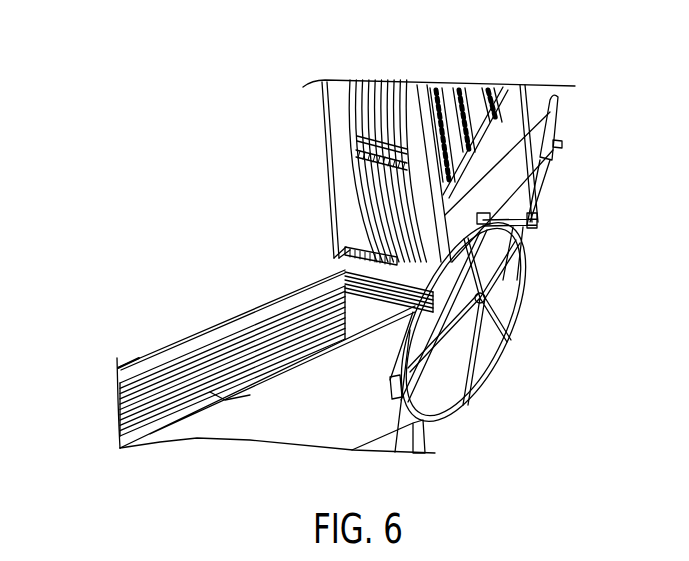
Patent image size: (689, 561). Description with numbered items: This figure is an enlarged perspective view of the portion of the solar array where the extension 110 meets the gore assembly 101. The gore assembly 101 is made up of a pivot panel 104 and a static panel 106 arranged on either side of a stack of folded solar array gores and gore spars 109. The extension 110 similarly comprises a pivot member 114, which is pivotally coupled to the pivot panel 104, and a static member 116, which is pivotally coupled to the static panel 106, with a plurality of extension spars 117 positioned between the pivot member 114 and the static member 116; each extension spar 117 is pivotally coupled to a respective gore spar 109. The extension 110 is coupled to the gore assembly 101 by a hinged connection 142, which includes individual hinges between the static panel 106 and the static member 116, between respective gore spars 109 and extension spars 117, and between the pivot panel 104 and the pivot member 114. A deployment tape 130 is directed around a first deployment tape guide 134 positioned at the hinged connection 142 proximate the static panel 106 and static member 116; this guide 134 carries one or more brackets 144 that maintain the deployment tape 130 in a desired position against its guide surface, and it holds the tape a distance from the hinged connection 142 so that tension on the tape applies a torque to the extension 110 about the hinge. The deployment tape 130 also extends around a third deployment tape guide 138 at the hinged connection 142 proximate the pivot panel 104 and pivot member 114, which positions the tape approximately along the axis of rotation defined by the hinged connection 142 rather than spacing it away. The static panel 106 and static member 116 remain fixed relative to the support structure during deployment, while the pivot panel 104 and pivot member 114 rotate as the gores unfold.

The gore assembly 101 is at (177, 322).
The pivot panel 104 is at (197, 438).
The static panel 106 is at (118, 362).
The gore spars 109 is at (105, 415).
The extension 110 is at (490, 68).
The pivot member 114 is at (343, 115).
The static member 116 is at (555, 98).
The extension spars 117 is at (378, 70).
The deployment tape 130 is at (333, 195).
The first deployment tape guide 134 is at (508, 307).
The third deployment tape guide 138 is at (333, 248).
The hinged connection 142 is at (328, 280).
The brackets 144 is at (533, 232).